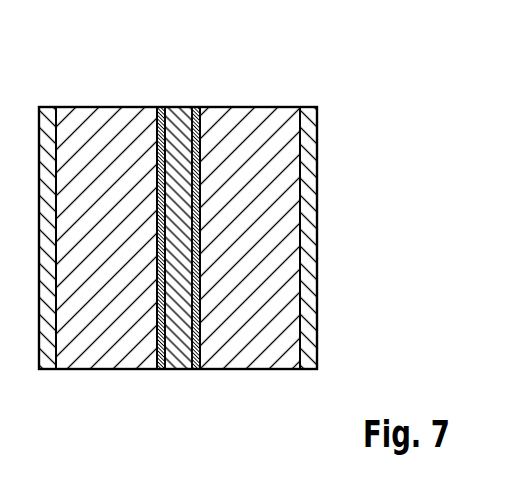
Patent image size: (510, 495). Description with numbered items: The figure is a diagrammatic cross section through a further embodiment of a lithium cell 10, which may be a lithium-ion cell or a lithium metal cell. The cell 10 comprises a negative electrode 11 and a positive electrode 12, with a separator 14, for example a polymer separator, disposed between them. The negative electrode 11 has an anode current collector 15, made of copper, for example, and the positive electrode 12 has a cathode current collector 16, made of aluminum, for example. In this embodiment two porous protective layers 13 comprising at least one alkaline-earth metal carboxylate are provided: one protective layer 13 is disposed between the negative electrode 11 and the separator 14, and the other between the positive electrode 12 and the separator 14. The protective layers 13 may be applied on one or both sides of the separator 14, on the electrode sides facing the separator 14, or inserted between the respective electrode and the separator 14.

The lithium cell 10 is at (328, 70).
The negative electrode 11 is at (249, 363).
The positive electrode 12 is at (104, 363).
The porous protective layer 13 is at (160, 363).
The separator 14 is at (173, 363).
The anode current collector 15 is at (307, 363).
The cathode current collector 16 is at (44, 363).